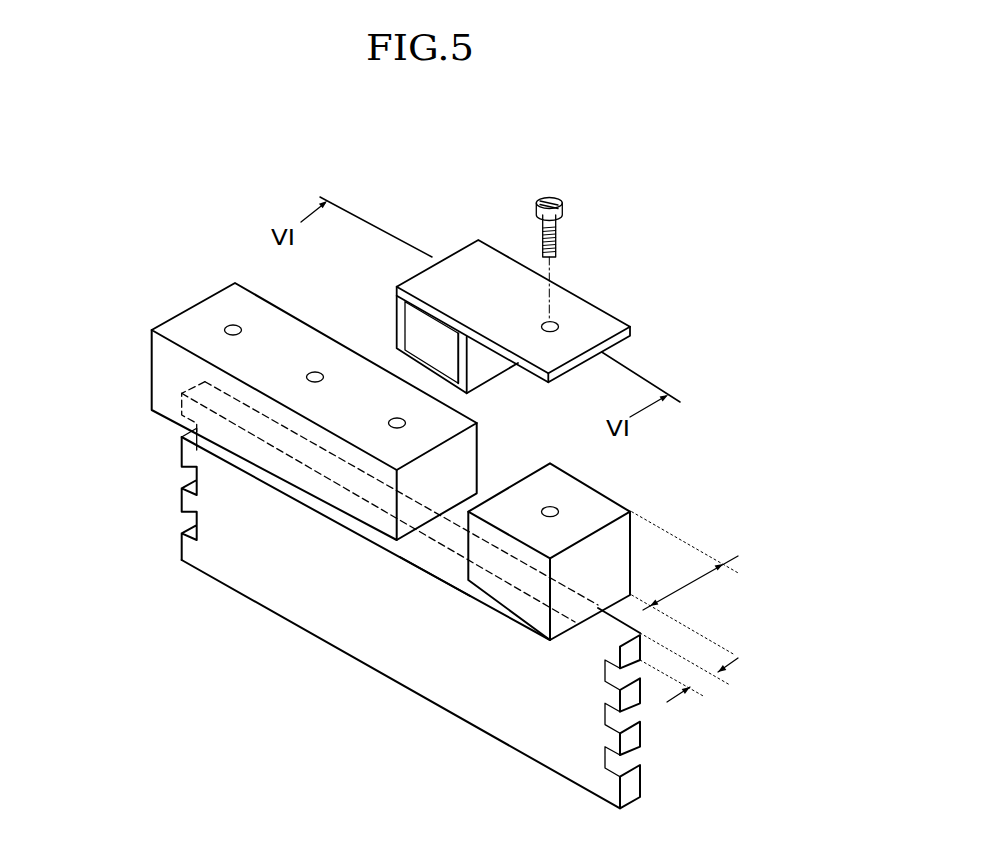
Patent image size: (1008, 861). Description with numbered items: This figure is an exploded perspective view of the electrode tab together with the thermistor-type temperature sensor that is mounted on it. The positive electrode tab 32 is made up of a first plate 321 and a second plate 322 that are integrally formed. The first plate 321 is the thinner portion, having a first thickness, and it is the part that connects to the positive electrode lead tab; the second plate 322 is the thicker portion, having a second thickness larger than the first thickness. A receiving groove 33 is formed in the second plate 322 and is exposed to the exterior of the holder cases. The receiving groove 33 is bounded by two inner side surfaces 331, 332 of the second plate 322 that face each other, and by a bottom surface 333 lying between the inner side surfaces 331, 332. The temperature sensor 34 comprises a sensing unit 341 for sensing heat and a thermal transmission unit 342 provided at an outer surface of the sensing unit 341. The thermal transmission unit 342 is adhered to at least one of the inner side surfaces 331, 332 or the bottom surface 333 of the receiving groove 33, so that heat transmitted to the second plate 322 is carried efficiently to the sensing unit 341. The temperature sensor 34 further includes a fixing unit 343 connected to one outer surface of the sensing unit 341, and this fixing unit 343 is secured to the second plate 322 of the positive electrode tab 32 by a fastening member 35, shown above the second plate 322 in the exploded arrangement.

The positive electrode tab 32 is at (159, 295).
The first plate 321 is at (268, 560).
The second plate 322 is at (165, 372).
The receiving groove 33 is at (386, 771).
The inner side surface 331 is at (437, 548).
The inner side surface 332 is at (436, 548).
The bottom surface 333 is at (420, 493).
The temperature sensor 34 is at (443, 234).
The sensing unit 341 is at (448, 352).
The thermal transmission unit 342 is at (397, 357).
The fixing unit 343 is at (582, 312).
The fastening member 35 is at (551, 197).